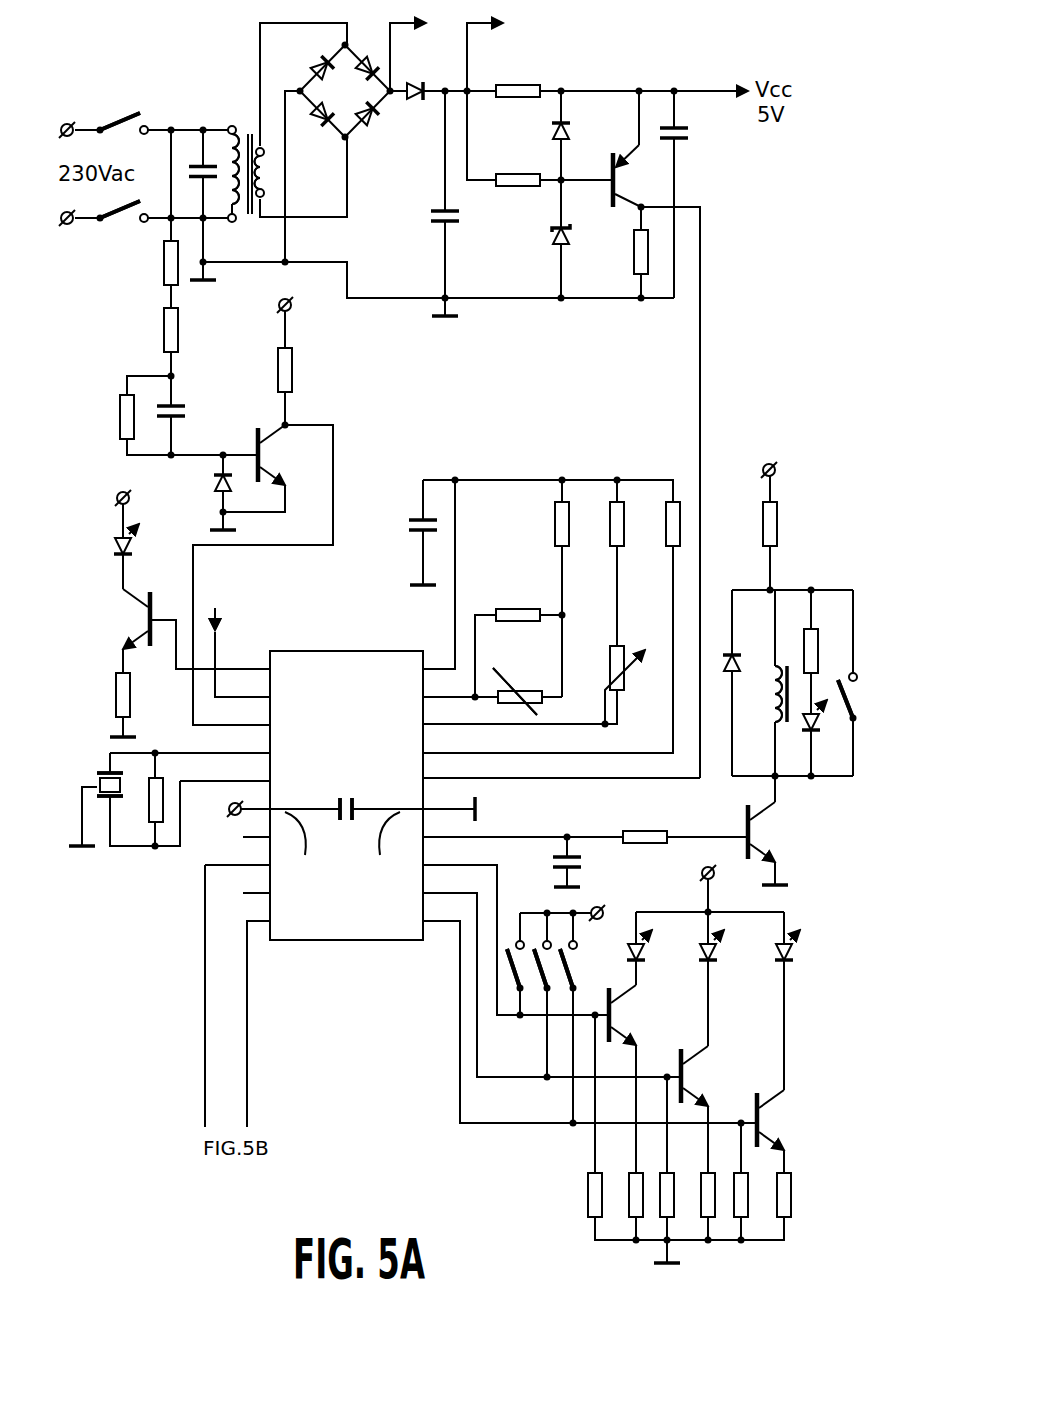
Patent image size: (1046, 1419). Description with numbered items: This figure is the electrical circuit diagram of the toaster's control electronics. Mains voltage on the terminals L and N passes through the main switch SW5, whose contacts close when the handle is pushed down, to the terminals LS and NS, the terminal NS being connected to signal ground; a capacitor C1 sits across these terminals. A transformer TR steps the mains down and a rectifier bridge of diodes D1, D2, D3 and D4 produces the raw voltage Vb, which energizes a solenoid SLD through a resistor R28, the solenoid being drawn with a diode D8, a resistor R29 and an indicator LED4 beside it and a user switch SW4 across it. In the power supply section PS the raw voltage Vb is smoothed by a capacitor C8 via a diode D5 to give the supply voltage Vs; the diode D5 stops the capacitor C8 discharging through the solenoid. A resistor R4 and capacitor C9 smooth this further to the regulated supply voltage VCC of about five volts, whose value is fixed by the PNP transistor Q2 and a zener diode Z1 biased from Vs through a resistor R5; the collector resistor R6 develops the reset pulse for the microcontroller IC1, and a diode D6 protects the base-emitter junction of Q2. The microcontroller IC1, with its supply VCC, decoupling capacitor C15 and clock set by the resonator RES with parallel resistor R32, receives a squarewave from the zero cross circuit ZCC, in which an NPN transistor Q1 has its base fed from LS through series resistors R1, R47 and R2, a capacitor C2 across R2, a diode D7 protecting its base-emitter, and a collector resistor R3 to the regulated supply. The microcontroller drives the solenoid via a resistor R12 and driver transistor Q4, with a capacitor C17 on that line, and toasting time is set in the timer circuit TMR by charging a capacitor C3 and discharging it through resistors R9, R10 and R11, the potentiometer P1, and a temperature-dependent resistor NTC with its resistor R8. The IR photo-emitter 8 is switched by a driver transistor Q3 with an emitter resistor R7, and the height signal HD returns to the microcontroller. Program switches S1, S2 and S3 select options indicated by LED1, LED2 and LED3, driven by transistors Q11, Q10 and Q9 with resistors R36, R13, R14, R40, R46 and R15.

The IR photo-emitter 8 is at (134, 548).
The mains terminal L is at (67, 124).
The mains terminal N is at (67, 226).
The main switch SW5 is at (126, 184).
The capacitor C1 is at (195, 163).
The terminal LS is at (207, 153).
The terminal NS is at (217, 187).
The transformer TR is at (250, 133).
The resistor R1 is at (163, 275).
The resistor R47 is at (163, 330).
The zero cross circuit ZCC is at (243, 373).
The power supply PS is at (344, 255).
The resistor R2 is at (119, 415).
The capacitor C2 is at (186, 411).
The resistor R3 is at (292, 360).
The NPN transistor Q1 is at (262, 455).
The diode D7 is at (214, 487).
The supply voltage Vs is at (116, 500).
The driver transistor Q3 is at (147, 620).
The resistor R7 is at (115, 698).
The signal HD is at (236, 623).
The parallel resistor R32 is at (165, 805).
The resonator RES is at (110, 830).
The supply voltage VCC is at (215, 813).
The microcontroller IC1 is at (346, 783).
The capacitor C15 is at (346, 822).
The rectifier bridge diode D1 is at (311, 72).
The rectifier bridge diode D2 is at (364, 60).
The rectifier bridge diode D3 is at (325, 140).
The rectifier bridge diode D4 is at (363, 140).
The diode D5 is at (413, 100).
The raw voltage Vb is at (426, 10).
The resistor R4 is at (513, 98).
The resistor R5 is at (513, 187).
The capacitor C8 is at (430, 217).
The diode D6 is at (573, 131).
The PNP transistor Q2 is at (618, 180).
The capacitor C9 is at (689, 133).
The zener diode Z1 is at (574, 240).
The resistor R6 is at (633, 272).
The capacitor C3 is at (409, 526).
The resistor R9 is at (554, 528).
The series resistor R10 is at (609, 528).
The reference resistor R11 is at (665, 528).
The resistor R8 is at (520, 608).
The timer circuit TMR is at (612, 608).
The temperature-dependent resistor NTC is at (518, 684).
The control potentiometer P1 is at (630, 687).
The resistor R28 is at (778, 517).
The solenoid SLD is at (788, 607).
The diode D8 is at (745, 662).
The resistor R29 is at (818, 638).
The switch SW4 is at (850, 700).
The LED LED4 is at (822, 724).
The resistor R12 is at (645, 830).
The driver transistor Q4 is at (752, 832).
The capacitor C17 is at (552, 860).
The switch S1 is at (563, 972).
The second switch S2 is at (537, 972).
The third switch S3 is at (510, 972).
The transistor Q11 is at (613, 1015).
The indicator LED1 is at (797, 948).
The indicator LED2 is at (722, 948).
The indicator LED3 is at (650, 948).
The transistor Q10 is at (685, 1076).
The transistor Q9 is at (761, 1120).
The resistor R36 is at (587, 1190).
The resistor R13 is at (629, 1195).
The resistor R14 is at (701, 1192).
The resistor R40 is at (675, 1192).
The resistor R46 is at (749, 1192).
The resistor R15 is at (792, 1190).